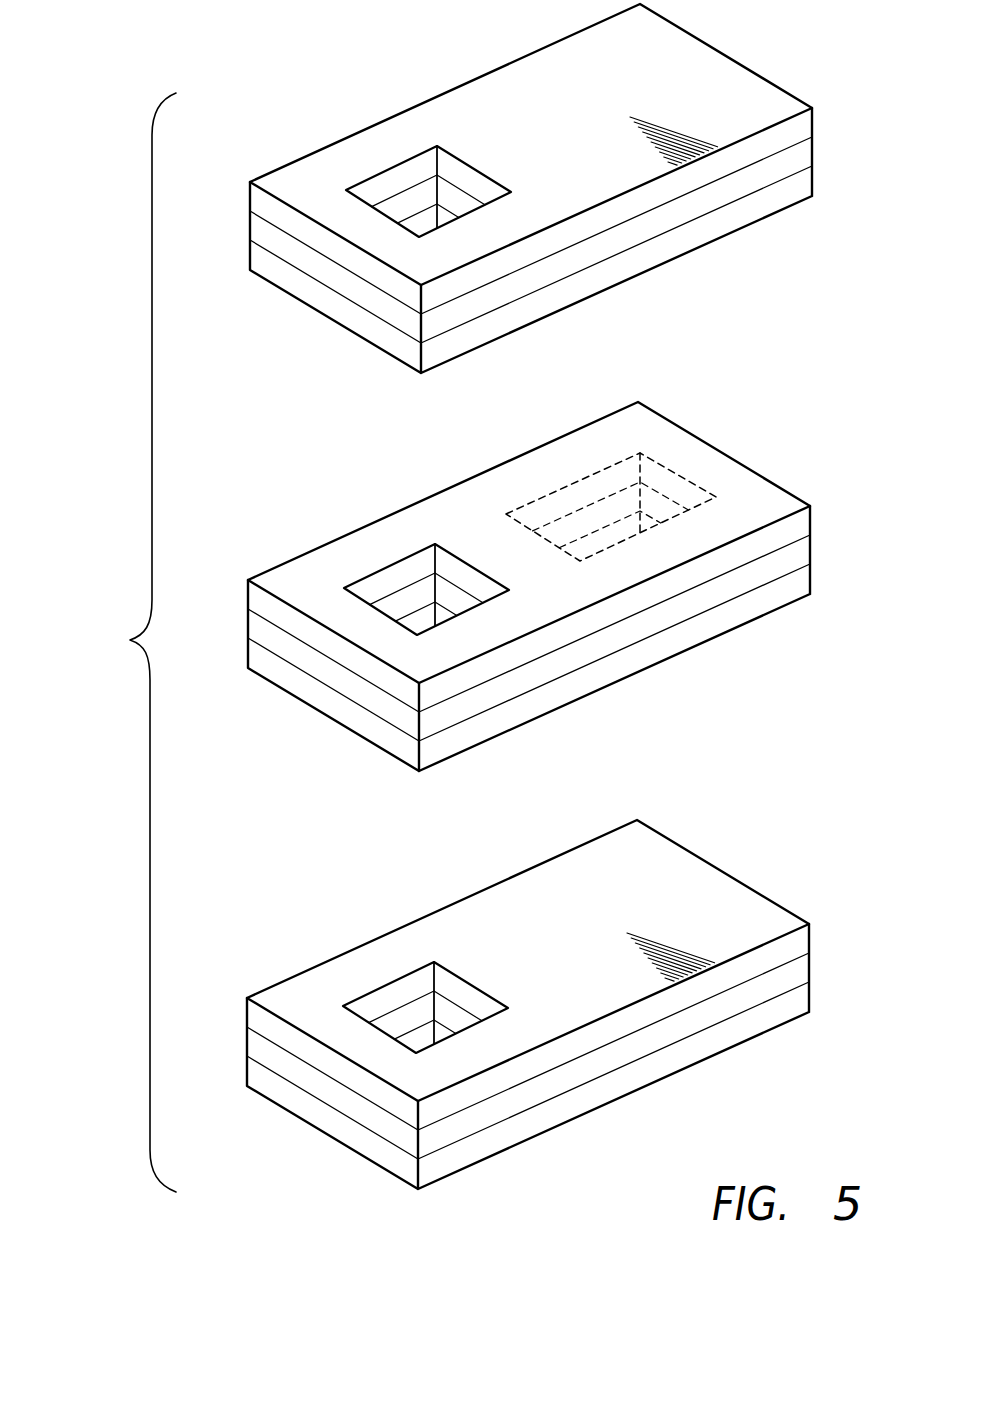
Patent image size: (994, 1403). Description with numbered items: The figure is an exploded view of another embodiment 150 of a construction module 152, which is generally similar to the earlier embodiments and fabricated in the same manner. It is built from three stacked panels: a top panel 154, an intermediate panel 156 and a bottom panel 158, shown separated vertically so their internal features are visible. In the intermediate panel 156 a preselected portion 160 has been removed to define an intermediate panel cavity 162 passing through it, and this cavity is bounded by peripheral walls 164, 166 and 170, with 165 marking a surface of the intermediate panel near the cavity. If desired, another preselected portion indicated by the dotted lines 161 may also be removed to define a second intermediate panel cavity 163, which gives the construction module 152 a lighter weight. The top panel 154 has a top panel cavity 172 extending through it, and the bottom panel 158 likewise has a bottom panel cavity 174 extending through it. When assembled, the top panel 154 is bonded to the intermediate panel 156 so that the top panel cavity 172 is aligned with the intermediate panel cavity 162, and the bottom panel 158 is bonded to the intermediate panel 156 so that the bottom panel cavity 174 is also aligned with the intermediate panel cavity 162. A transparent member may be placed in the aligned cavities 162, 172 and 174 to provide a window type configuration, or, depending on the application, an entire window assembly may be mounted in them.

The embodiment 150 is at (832, 540).
The construction module 152 is at (123, 641).
The top panel 154 is at (555, 188).
The intermediate panel 156 is at (504, 563).
The bottom panel 158 is at (538, 1004).
The preselected portion 160 is at (413, 622).
The dotted lines 161 is at (652, 458).
The intermediate panel cavity 162 is at (427, 622).
The second intermediate panel cavity 163 is at (595, 543).
The peripheral wall 164 is at (462, 640).
The top surface 165 is at (345, 563).
The peripheral wall 166 is at (362, 628).
The peripheral wall 170 is at (507, 557).
The top panel cavity 172 is at (423, 222).
The bottom panel cavity 174 is at (423, 1040).